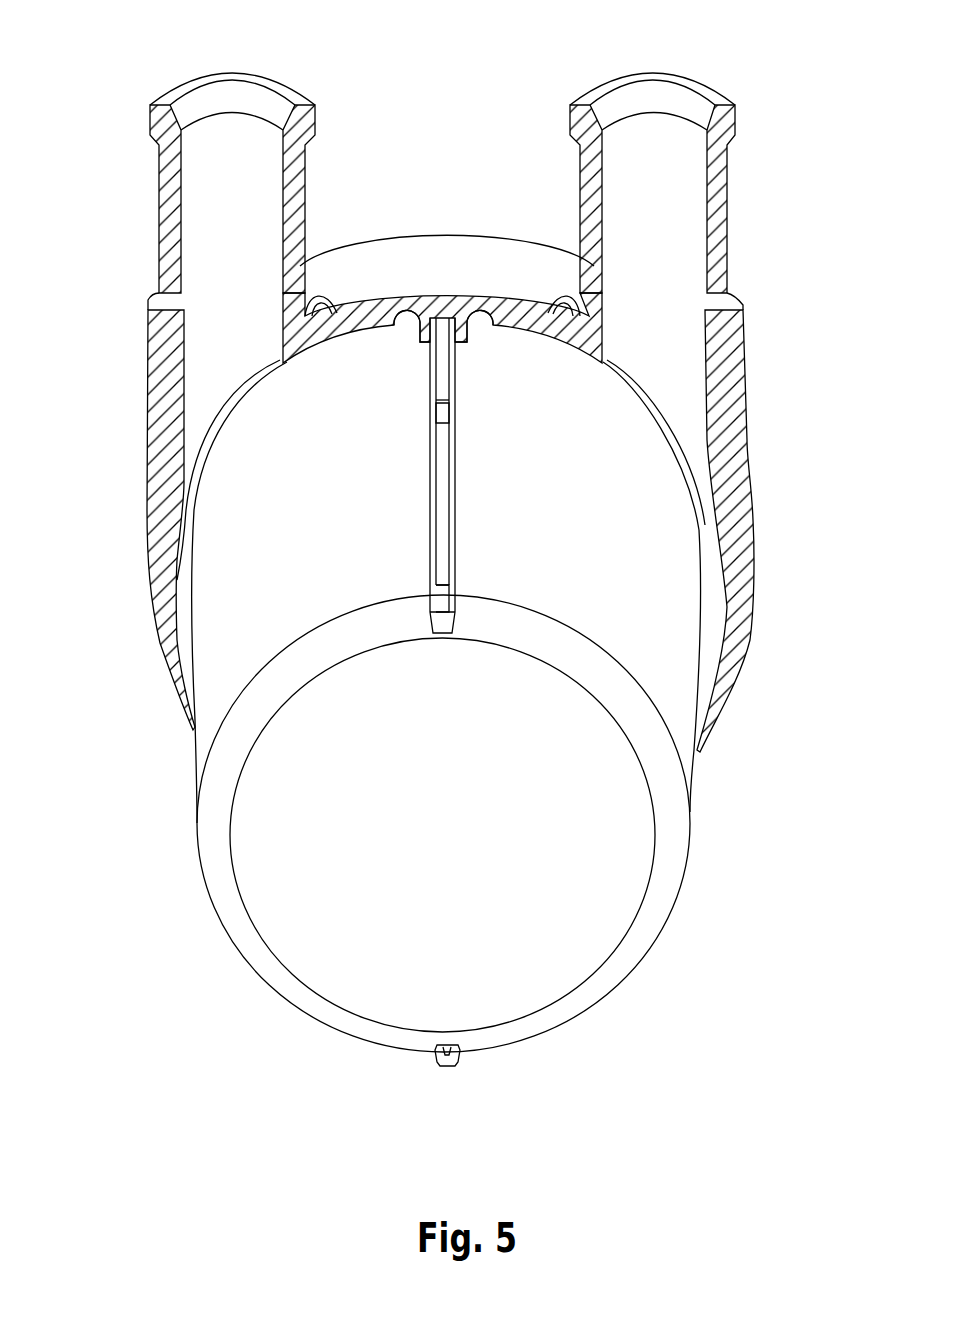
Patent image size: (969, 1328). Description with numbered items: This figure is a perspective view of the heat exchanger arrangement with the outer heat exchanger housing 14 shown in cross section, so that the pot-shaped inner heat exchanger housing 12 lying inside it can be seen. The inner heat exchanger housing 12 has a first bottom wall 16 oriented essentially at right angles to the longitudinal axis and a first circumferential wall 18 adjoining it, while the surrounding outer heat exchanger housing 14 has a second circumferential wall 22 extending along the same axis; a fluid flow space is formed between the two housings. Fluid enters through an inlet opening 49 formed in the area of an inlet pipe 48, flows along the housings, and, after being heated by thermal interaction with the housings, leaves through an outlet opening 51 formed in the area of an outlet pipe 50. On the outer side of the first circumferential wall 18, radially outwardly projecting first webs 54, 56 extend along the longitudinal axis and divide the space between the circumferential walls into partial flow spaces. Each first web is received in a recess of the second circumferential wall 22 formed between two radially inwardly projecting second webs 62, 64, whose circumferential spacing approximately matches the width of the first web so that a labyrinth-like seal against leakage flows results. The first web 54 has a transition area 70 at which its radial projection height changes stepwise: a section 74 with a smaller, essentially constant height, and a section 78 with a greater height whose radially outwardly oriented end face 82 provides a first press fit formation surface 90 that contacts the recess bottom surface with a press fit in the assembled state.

The inner heat exchanger housing 12 is at (194, 753).
The outer heat exchanger housing 14 is at (471, 551).
The first bottom wall 16 is at (598, 905).
The first circumferential wall 18 is at (670, 653).
The second circumferential wall 22 is at (738, 593).
The inlet pipe 48 is at (734, 240).
The inlet opening 49 is at (676, 390).
The outlet pipe 50 is at (160, 268).
The outlet opening 51 is at (223, 376).
The first web 54 is at (430, 494).
The first web 56 is at (466, 1062).
The second web 62 is at (395, 308).
The second web 64 is at (482, 306).
The transition area 70 is at (474, 411).
The section 74 is at (430, 560).
The section 78 is at (430, 377).
The end face 82 is at (438, 318).
The first press fit formation surface 90 is at (458, 295).